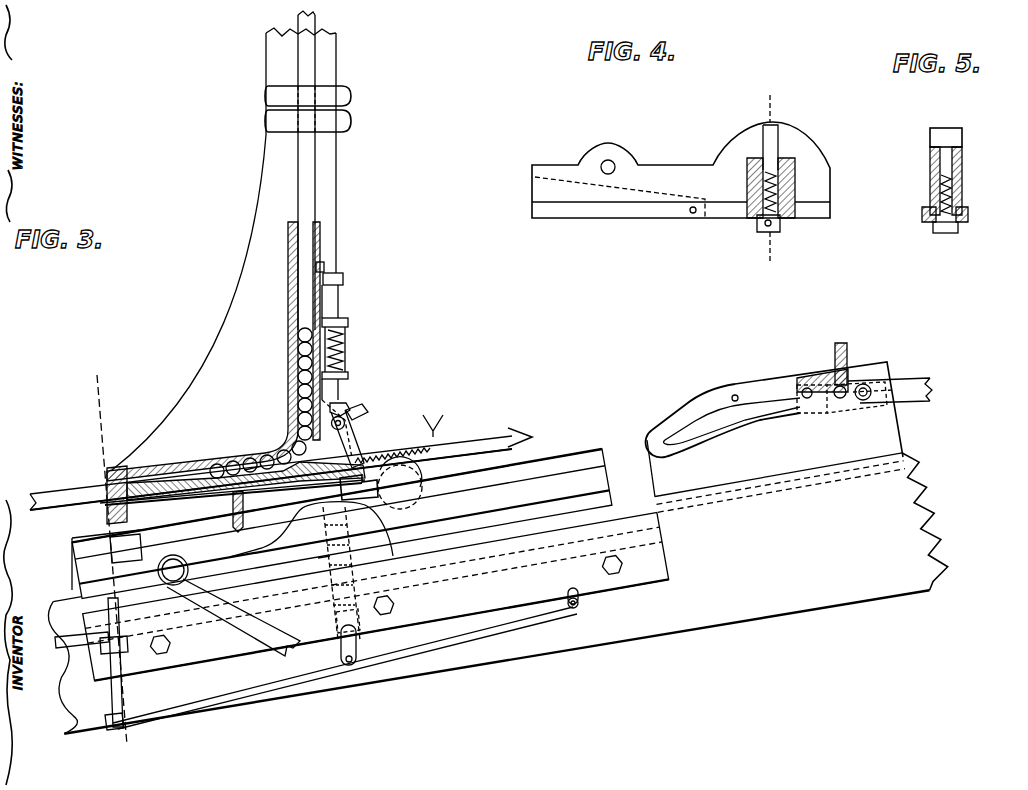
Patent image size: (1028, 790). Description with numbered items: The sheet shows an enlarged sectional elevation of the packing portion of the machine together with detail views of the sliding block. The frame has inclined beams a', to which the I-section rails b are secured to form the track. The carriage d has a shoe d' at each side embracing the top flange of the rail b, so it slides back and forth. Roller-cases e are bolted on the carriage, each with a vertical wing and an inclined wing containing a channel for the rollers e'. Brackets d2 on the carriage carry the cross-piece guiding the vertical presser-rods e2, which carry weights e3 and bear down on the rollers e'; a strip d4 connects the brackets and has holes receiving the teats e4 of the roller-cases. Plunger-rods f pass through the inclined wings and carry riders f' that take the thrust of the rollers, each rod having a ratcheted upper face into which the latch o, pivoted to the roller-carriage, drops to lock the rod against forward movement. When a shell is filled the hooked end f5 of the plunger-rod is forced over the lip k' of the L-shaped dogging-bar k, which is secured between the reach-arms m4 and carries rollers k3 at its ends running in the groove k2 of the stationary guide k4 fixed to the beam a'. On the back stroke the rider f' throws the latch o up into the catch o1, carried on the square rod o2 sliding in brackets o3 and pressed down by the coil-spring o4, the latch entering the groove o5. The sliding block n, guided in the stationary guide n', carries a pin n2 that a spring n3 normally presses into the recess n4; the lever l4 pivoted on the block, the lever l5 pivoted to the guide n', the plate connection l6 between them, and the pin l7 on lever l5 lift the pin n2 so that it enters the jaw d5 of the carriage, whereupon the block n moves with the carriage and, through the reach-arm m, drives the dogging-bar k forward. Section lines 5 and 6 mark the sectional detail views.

In FIG. 3, the inclined beam a' is at (496, 552).
In FIG. 3, the rail b is at (342, 524).
In FIG. 3, the stationary guide n' is at (376, 596).
In FIG. 3, the bracket d2 is at (221, 254).
In FIG. 3, the presser-rod e2 is at (316, 178).
In FIG. 3, the weight e3 is at (351, 100).
In FIG. 3, the strip d4 is at (324, 268).
In FIG. 3, the teat e4 is at (343, 282).
In FIG. 3, the bracket o3 is at (348, 322).
In FIG. 3, the coil-spring o4 is at (345, 345).
In FIG. 3, the square rod o2 is at (348, 376).
In FIG. 3, the groove o5 is at (350, 405).
In FIG. 3, the catch o1 is at (365, 410).
In FIG. 3, the latch o is at (352, 445).
In FIG. 3, the plunger-rod f is at (271, 459).
In FIG. 3, the rider f' is at (50, 486).
In FIG. 3, the hooked end f5 is at (522, 430).
In FIG. 3, the roller-case e is at (253, 403).
In FIG. 3, the roller e' is at (253, 450).
In FIG. 3, the carriage d is at (201, 501).
In FIG. 3, the shoe d' is at (93, 560).
In FIG. 3, the jaw d5 is at (398, 467).
In FIG. 3, the sliding block n is at (311, 529).
In FIG. 4, the sliding block n is at (681, 170).
In FIG. 5, the sliding block n is at (963, 194).
In FIG. 3, the pin n2 is at (335, 540).
In FIG. 4, the pin n2 is at (785, 180).
In FIG. 5, the pin n2 is at (948, 160).
In FIG. 3, the spring n3 is at (304, 567).
In FIG. 4, the spring n3 is at (747, 188).
In FIG. 3, the recess n4 is at (351, 617).
In FIG. 3, the reach-arm m is at (229, 605).
In FIG. 3, the lever l5 is at (240, 710).
In FIG. 3, the pin l7 is at (345, 650).
In FIG. 3, the plate connection l6 is at (110, 705).
In FIG. 3, the lever l4 is at (70, 648).
In FIG. 3, the section line 6 6 is at (112, 558).
In FIG. 3, the stationary guide k4 is at (723, 420).
In FIG. 3, the roller k3 is at (822, 415).
In FIG. 3, the lip k' is at (815, 368).
In FIG. 3, the dogging-bar k is at (851, 360).
In FIG. 3, the groove k2 is at (735, 395).
In FIG. 3, the reach-arm m4 is at (905, 380).
In FIG. 4, the section line 5 5 is at (769, 178).